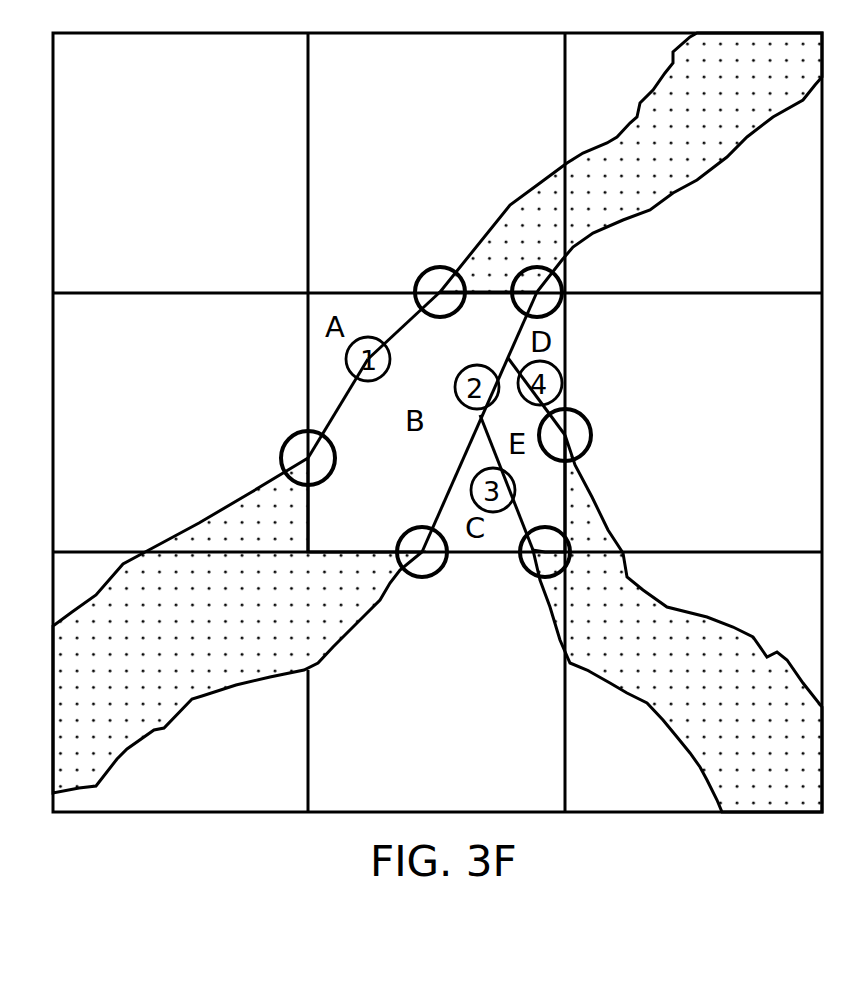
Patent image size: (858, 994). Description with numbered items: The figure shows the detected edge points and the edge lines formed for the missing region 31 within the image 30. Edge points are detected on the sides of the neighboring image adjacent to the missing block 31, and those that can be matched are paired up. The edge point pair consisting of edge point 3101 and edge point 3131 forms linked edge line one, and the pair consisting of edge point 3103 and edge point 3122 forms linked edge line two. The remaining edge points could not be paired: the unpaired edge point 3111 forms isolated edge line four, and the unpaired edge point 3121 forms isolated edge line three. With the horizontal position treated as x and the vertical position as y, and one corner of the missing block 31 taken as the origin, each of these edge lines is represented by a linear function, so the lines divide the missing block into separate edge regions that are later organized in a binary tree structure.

The image 30 is at (112, 91).
The missing block 31 is at (566, 325).
The edge point 3101 is at (434, 283).
The edge point 3103 is at (565, 307).
The unpaired edge point 3111 is at (575, 420).
The edge point 3131 is at (302, 450).
The edge point 3122 is at (421, 565).
The unpaired edge point 3121 is at (519, 572).